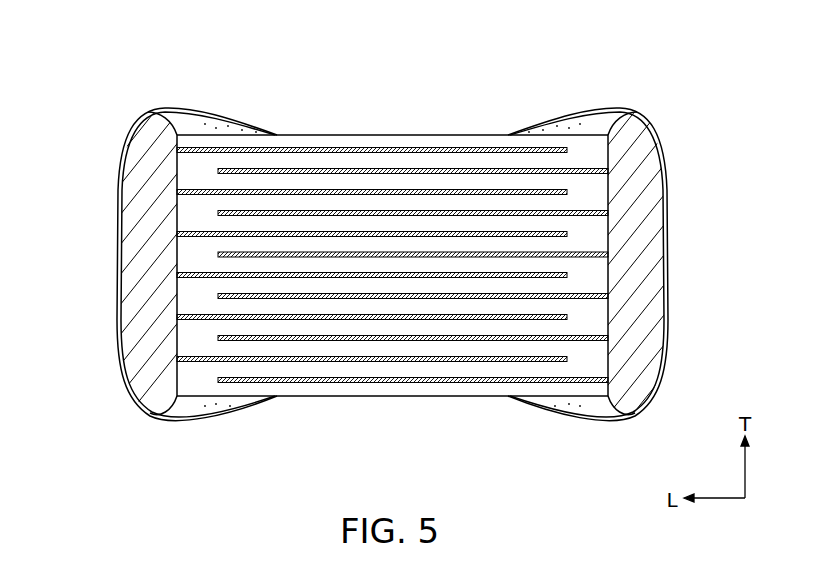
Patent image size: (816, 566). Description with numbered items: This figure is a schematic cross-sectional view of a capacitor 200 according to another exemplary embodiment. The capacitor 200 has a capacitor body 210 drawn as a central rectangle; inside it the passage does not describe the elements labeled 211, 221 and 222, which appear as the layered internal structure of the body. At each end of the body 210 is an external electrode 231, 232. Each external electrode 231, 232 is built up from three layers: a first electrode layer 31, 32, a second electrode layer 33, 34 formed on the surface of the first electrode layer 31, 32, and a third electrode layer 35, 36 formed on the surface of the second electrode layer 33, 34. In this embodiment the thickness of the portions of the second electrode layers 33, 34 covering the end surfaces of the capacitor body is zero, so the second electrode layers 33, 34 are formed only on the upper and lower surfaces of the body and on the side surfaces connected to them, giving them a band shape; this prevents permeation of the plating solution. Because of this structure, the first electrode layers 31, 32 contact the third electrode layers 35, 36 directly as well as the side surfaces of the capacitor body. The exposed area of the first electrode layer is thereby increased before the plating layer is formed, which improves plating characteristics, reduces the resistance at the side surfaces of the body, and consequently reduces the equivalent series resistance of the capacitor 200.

The capacitor 200 is at (527, 30).
The body 210 is at (385, 133).
The dielectric layer 211 is at (593, 190).
The first internal electrode 221 is at (217, 198).
The second internal electrode 222 is at (592, 234).
The first external electrode 231 is at (186, 255).
The second external electrode 232 is at (574, 255).
The first electrode layer 31 is at (135, 346).
The first electrode layer 32 is at (653, 346).
The second electrode layer 33 is at (207, 408).
The second electrode layer 34 is at (578, 410).
The third electrode layer 35 is at (128, 384).
The third electrode layer 36 is at (659, 383).